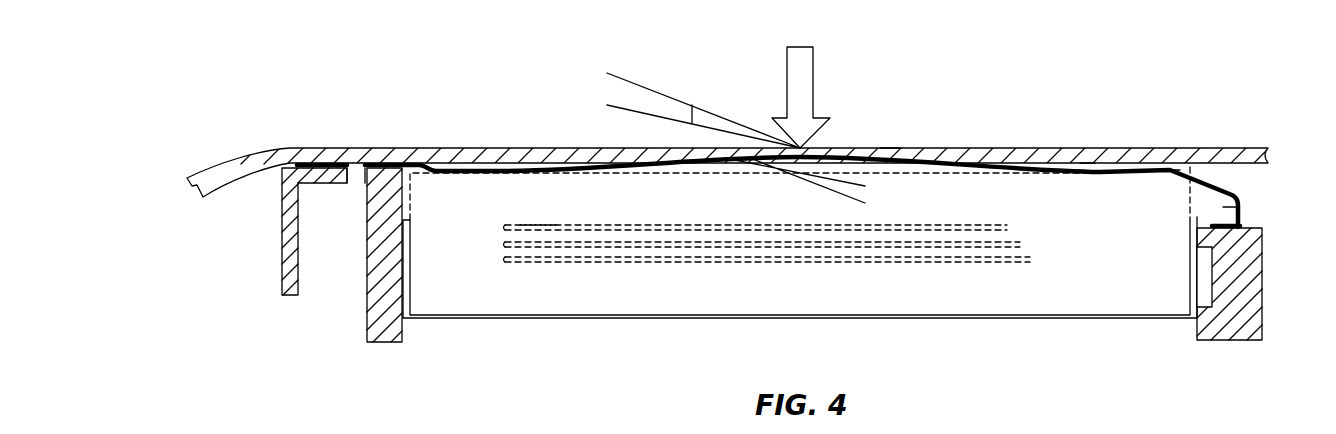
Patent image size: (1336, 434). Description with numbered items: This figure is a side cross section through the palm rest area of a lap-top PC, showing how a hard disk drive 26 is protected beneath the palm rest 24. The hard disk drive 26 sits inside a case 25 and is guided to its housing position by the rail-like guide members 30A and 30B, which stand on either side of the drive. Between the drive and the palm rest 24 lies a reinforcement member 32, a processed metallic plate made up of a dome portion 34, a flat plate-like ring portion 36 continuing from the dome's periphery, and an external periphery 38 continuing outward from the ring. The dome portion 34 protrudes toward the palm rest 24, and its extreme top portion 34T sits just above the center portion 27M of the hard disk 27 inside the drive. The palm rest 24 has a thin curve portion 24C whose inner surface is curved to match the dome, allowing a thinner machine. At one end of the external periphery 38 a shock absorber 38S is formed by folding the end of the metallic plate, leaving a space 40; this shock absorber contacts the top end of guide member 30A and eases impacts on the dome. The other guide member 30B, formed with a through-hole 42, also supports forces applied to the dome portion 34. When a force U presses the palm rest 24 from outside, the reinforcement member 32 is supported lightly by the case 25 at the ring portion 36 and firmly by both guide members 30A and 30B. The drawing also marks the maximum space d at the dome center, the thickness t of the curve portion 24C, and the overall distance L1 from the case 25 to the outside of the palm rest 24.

The palm rest 24 is at (1238, 152).
The curve portion 24C is at (885, 151).
The case 25 is at (1008, 166).
The hard disk drive 26 is at (508, 303).
The hard disk 27 is at (1007, 225).
The center portion 27M is at (558, 223).
The guide member 30A is at (292, 290).
The guide member 30B is at (1237, 317).
The reinforcement member 32 is at (1086, 165).
The dome portion 34 is at (1010, 138).
The extreme top portion 34T is at (818, 157).
The ring portion 36 is at (1172, 163).
The external periphery 38 is at (337, 160).
The shock absorber 38S is at (1250, 207).
The space 40 is at (1237, 207).
The through-hole 42 is at (358, 184).
The force U is at (797, 82).
The distance L1 is at (617, 130).
The thickness t is at (692, 137).
The maximum value of the space d is at (865, 170).